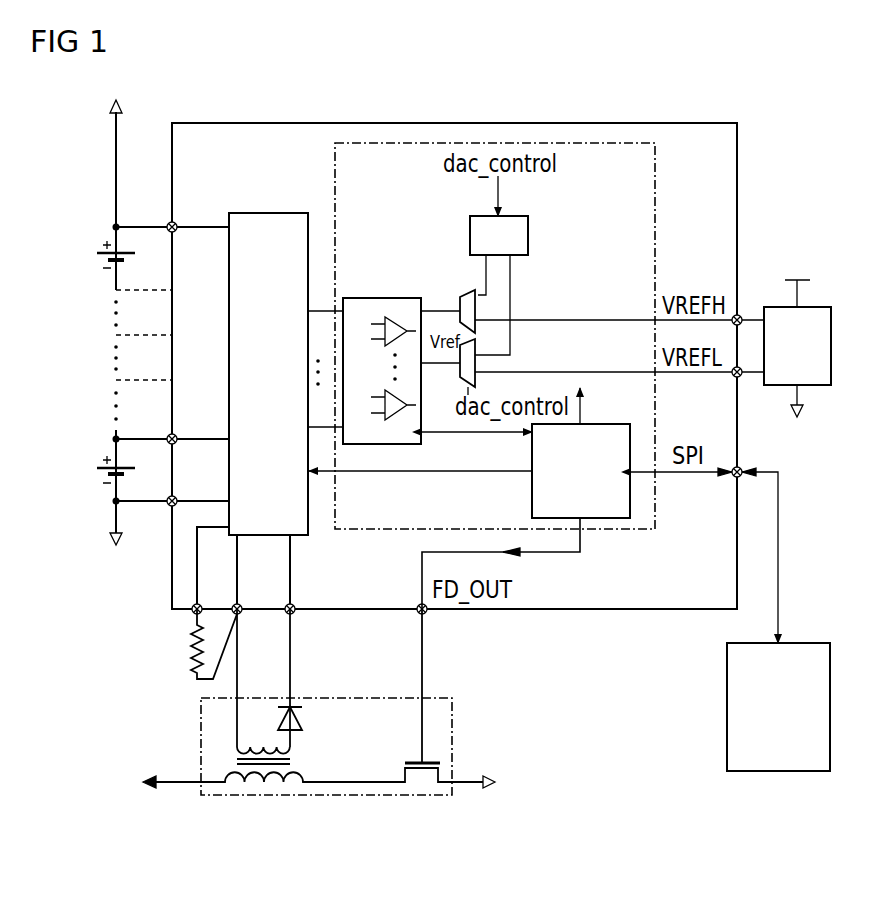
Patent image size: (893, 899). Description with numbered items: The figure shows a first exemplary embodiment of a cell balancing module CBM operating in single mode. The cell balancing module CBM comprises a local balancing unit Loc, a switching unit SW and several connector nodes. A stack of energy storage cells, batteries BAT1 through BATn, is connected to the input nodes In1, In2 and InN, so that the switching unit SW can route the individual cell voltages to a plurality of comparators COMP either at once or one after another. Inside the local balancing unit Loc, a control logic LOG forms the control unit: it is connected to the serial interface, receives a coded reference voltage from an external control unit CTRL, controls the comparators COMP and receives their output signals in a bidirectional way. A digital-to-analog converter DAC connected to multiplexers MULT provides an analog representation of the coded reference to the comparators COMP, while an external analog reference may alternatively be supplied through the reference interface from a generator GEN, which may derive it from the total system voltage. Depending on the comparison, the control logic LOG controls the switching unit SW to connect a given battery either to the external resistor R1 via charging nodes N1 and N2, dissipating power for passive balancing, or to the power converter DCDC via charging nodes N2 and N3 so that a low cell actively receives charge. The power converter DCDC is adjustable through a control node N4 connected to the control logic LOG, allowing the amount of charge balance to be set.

The energy storage cell BATn is at (100, 258).
The energy storage cell BAT1 is at (100, 472).
The cell balancing module CBM is at (468, 123).
The input node InN is at (177, 222).
The input node In2 is at (177, 434).
The input node In1 is at (177, 496).
The switching unit SW is at (268, 374).
The charging/discharging node N1 is at (195, 612).
The charging/discharging node N2 is at (241, 605).
The charging/discharging node N3 is at (294, 605).
The charge control node N4 is at (420, 605).
The resistor R1 is at (190, 655).
The power converter DCDC is at (453, 712).
The local balancing unit Loc is at (618, 532).
The comparator COMP is at (381, 298).
The multiplexer MULT is at (462, 292).
The digital-to-analog converter DAC is at (499, 265).
The control logic LOG is at (581, 471).
The generator GEN is at (797, 333).
The control unit CTRL is at (778, 707).